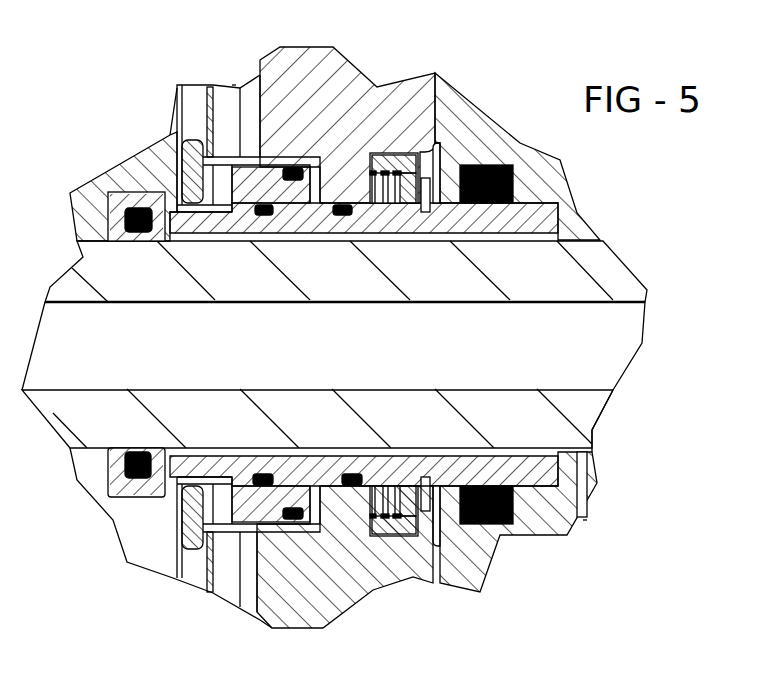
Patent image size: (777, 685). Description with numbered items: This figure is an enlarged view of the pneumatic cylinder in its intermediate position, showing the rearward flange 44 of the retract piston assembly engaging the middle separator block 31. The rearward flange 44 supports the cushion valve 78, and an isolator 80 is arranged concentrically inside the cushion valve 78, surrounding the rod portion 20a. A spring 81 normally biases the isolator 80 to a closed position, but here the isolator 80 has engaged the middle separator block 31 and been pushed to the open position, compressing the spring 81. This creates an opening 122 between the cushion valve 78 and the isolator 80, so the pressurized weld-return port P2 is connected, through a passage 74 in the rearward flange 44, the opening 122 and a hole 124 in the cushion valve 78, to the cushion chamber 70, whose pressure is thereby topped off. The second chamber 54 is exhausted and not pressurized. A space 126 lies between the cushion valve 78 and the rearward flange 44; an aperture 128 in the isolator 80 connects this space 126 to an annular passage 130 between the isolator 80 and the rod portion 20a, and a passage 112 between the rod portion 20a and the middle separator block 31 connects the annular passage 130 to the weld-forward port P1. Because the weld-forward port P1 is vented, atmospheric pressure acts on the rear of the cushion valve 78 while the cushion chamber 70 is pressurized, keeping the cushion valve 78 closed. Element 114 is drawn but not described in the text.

The rod portion 20a is at (340, 290).
The passage 112 is at (592, 450).
The isolator 80 is at (493, 220).
The opening 122 is at (166, 188).
The cushion chamber 70 is at (160, 544).
The passage 74 is at (213, 83).
The hole 124 is at (172, 190).
The cushion valve 78 is at (250, 155).
The rearward flange 44 is at (350, 83).
The spring 81 is at (392, 185).
The annular passage 130 is at (413, 215).
The middle separator block 31 is at (550, 175).
The second chamber 54 is at (480, 588).
The seal ring 114 is at (503, 163).
The space 126 is at (323, 507).
The aperture 128 is at (320, 460).
The weld-forward port P1 is at (585, 522).
The weld-return port P2 is at (234, 84).